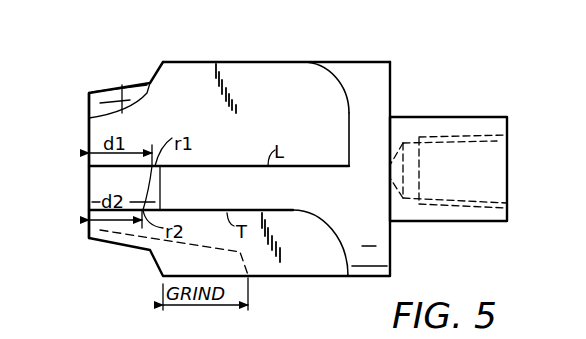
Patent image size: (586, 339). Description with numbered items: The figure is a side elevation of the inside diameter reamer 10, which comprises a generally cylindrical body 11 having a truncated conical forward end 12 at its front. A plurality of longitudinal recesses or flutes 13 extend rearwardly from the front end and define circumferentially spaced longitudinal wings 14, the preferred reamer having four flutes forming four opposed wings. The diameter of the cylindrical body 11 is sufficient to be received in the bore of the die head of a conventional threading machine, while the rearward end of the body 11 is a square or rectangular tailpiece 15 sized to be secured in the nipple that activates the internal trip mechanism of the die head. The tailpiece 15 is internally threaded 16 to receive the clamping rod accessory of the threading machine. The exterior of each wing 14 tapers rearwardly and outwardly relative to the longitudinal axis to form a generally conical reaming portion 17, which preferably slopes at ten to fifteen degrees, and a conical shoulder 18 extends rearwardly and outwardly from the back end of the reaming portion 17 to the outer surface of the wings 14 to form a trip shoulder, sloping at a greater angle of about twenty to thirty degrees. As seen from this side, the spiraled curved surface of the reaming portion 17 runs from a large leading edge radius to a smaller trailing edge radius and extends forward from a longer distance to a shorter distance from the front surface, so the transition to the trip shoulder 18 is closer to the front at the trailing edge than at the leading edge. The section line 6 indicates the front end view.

The section line 6 is at (97, 35).
The inside diameter reamer 10 is at (448, 76).
The cylindrical body 11 is at (264, 62).
The truncated conical forward end 12 is at (88, 138).
The longitudinal flutes 13 is at (322, 80).
The longitudinal wings 14 is at (200, 62).
The tailpiece 15 is at (452, 117).
The internal threads 16 is at (497, 141).
The conical reaming portion 17 is at (130, 90).
The conical shoulder 18 is at (162, 192).